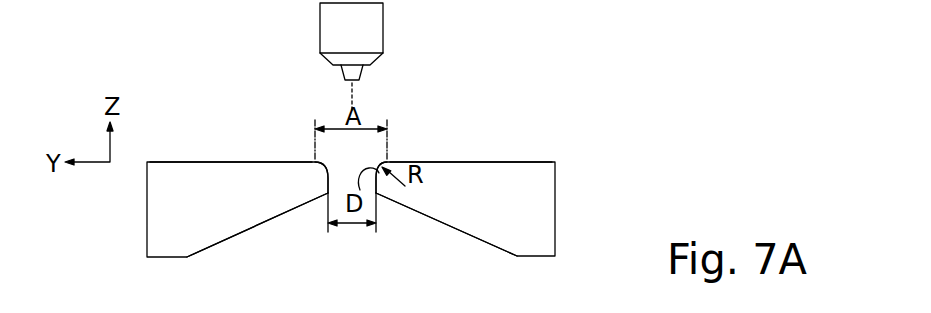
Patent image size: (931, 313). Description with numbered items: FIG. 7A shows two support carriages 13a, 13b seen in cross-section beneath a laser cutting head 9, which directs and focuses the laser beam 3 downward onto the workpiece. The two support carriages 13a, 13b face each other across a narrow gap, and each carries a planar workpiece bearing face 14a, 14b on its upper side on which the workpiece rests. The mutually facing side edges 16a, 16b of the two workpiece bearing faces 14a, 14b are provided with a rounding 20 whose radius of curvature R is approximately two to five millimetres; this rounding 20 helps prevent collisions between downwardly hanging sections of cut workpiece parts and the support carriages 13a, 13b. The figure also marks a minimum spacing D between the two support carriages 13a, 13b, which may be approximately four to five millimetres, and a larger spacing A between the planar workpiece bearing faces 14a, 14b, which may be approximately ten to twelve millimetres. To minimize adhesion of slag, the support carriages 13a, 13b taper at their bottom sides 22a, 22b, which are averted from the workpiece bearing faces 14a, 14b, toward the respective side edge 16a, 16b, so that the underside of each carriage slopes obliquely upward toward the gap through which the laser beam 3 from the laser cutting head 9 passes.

The laser cutting head 9 is at (340, 33).
The laser beam 3 is at (352, 85).
The support carriage 13a is at (135, 213).
The support carriage 13b is at (574, 202).
The workpiece bearing face 14a is at (198, 152).
The workpiece bearing face 14b is at (507, 152).
The side edge 16a is at (326, 152).
The side edge 16b is at (378, 152).
The rounding 20 is at (360, 190).
The bottom side 22a is at (259, 233).
The bottom side 22b is at (444, 233).